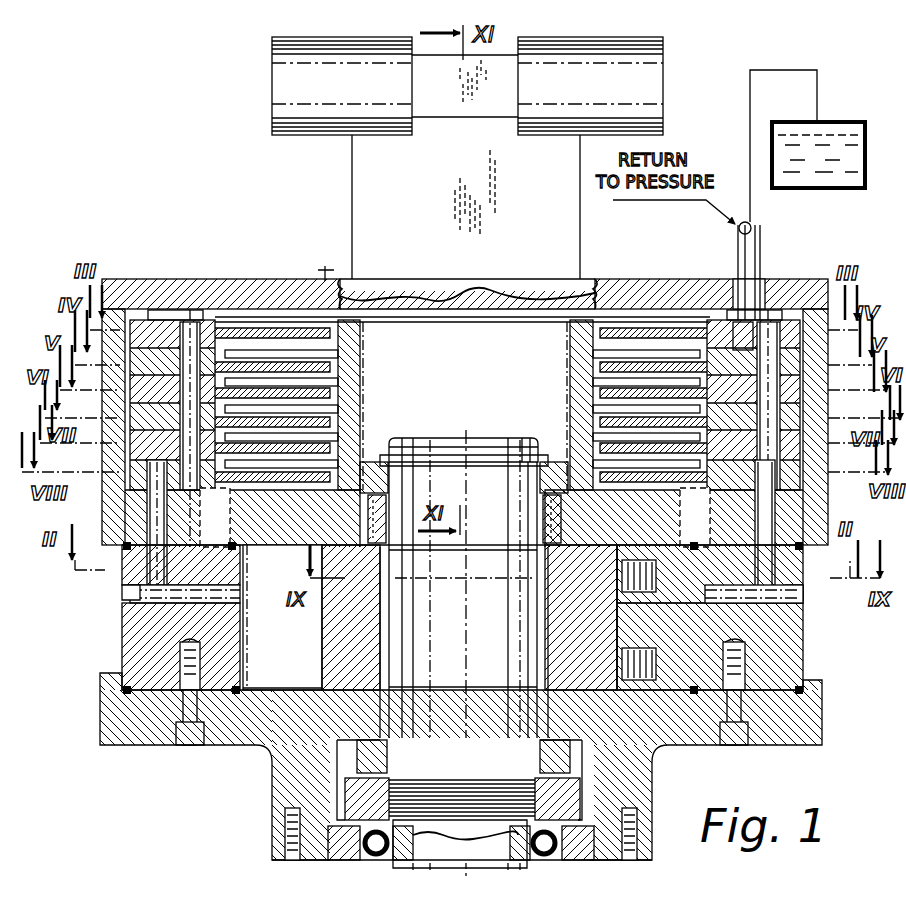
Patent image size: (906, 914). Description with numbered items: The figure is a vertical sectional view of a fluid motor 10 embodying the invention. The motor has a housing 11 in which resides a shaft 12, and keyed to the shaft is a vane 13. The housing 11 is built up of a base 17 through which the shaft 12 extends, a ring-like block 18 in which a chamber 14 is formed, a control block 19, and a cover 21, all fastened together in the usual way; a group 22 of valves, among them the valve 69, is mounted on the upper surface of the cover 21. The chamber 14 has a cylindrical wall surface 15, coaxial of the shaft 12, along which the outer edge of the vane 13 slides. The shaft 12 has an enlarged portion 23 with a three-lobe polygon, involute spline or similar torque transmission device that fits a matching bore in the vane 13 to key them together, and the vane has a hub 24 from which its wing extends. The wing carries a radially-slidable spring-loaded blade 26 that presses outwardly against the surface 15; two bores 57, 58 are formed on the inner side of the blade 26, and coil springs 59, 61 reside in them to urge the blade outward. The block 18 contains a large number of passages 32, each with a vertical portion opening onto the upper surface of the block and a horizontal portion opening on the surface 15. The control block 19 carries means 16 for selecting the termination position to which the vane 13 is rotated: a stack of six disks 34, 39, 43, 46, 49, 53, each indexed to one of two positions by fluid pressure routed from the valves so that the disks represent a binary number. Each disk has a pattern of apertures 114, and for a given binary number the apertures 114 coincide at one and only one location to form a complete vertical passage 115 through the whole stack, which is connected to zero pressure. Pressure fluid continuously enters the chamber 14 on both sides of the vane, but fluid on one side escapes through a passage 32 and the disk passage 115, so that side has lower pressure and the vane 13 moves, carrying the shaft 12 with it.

The motor 10 is at (598, 278).
The housing 11 is at (332, 261).
The shaft 12 is at (470, 445).
The vane 13 is at (322, 662).
The chamber 14 is at (288, 643).
The cylindrical wall surface 15 is at (248, 565).
The means for selecting a termination position 16 is at (670, 335).
The base 17 is at (103, 720).
The ring-like block 18 is at (797, 634).
The control block 19 is at (110, 310).
The cover 21 is at (535, 279).
The group of valves 22 is at (625, 40).
The enlarged portion 23 is at (470, 668).
The hub 24 is at (315, 676).
The blade 26 is at (612, 600).
The passages 32 is at (160, 600).
The disk 34 is at (360, 338).
The disk 39 is at (600, 370).
The disk 43 is at (338, 388).
The disk 46 is at (600, 420).
The disk 49 is at (330, 445).
The disk 53 is at (578, 470).
The bore 57 is at (635, 560).
The bore 58 is at (645, 690).
The coil spring 59 is at (620, 572).
The coil spring 61 is at (620, 660).
The valve 69 is at (663, 90).
The apertures 114 is at (183, 322).
The vertical passage 115 is at (770, 322).